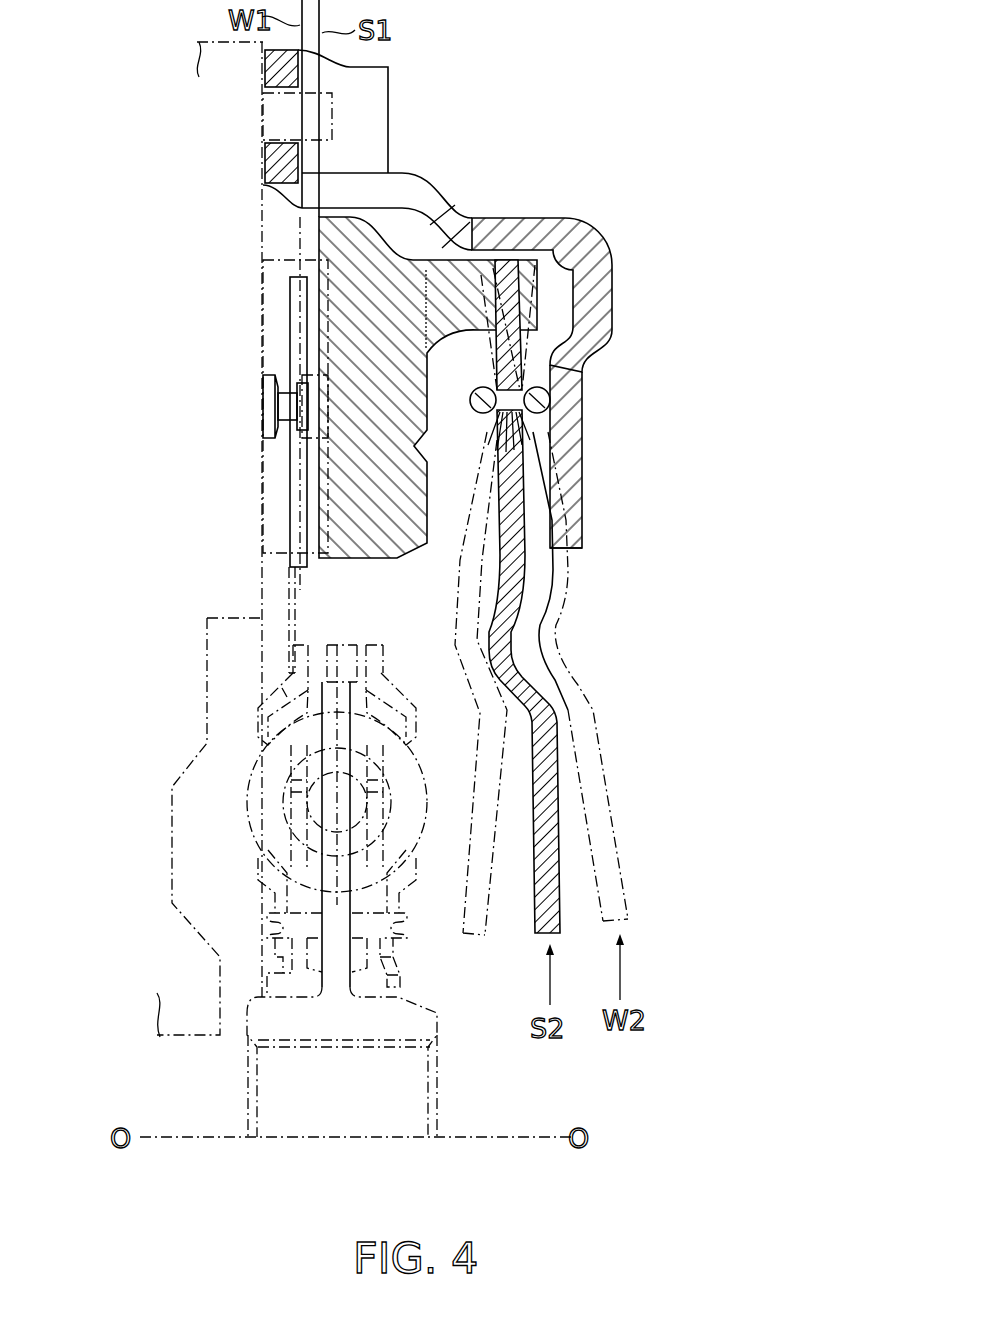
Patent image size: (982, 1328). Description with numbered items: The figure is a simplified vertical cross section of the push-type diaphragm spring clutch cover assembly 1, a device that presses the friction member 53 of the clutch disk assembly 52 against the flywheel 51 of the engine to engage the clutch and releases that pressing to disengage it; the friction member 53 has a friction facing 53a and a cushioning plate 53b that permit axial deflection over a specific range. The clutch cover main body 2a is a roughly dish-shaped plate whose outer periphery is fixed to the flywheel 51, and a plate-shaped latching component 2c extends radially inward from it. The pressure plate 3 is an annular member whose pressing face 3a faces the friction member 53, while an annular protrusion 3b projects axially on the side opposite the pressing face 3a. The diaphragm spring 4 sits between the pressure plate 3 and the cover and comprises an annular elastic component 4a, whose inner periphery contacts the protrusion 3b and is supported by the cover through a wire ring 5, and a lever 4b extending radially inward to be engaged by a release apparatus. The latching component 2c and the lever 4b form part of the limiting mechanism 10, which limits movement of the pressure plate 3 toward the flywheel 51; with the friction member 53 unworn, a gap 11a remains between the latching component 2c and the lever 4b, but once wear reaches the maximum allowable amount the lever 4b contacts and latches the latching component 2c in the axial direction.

The clutch cover assembly 1 is at (637, 115).
The clutch cover main body 2a is at (578, 234).
The latching component 2c is at (567, 445).
The pressure plate 3 is at (314, 237).
The pressing face 3a is at (318, 290).
The annular protrusion 3b is at (465, 250).
The diaphragm spring 4 is at (565, 813).
The annular elastic component 4a is at (503, 297).
The lever 4b is at (541, 752).
The wire ring 5 is at (547, 389).
The limiting mechanism 10 is at (566, 519).
The gap 11a is at (548, 563).
The flywheel 51 is at (272, 492).
The clutch disk assembly 52 is at (240, 764).
The friction member 53 is at (258, 387).
The friction facing 53a is at (267, 352).
The cushioning plate 53b is at (290, 318).